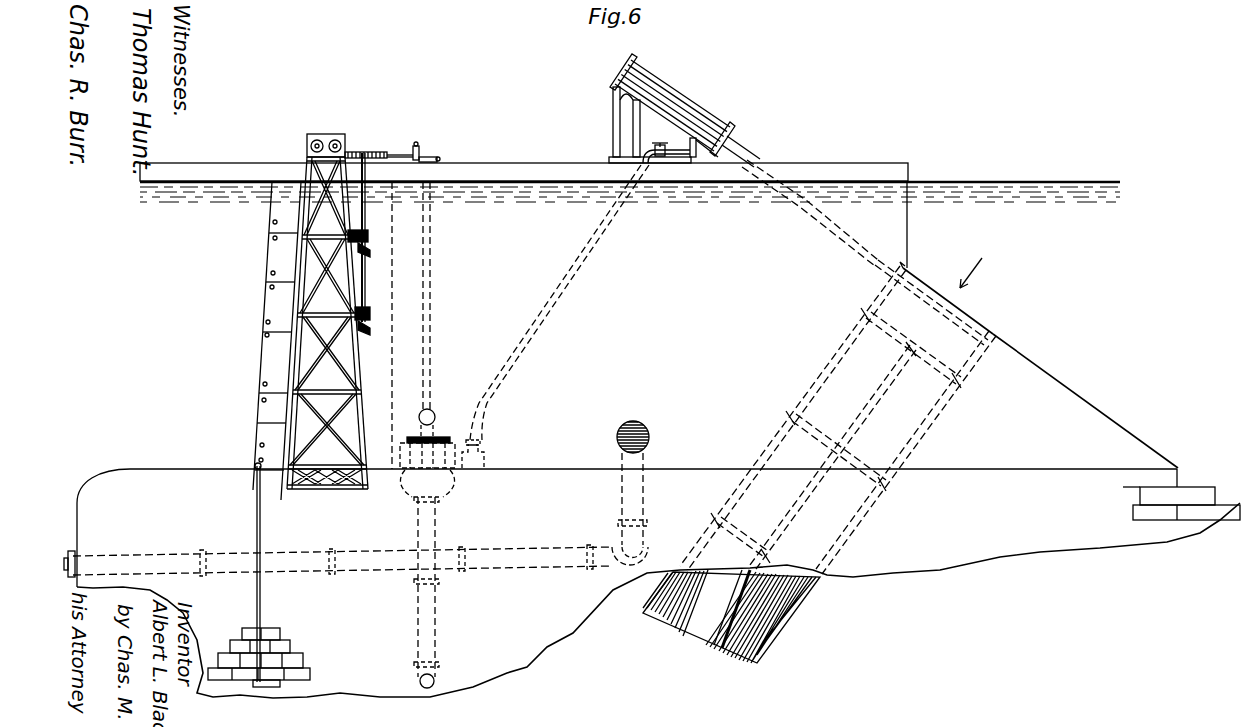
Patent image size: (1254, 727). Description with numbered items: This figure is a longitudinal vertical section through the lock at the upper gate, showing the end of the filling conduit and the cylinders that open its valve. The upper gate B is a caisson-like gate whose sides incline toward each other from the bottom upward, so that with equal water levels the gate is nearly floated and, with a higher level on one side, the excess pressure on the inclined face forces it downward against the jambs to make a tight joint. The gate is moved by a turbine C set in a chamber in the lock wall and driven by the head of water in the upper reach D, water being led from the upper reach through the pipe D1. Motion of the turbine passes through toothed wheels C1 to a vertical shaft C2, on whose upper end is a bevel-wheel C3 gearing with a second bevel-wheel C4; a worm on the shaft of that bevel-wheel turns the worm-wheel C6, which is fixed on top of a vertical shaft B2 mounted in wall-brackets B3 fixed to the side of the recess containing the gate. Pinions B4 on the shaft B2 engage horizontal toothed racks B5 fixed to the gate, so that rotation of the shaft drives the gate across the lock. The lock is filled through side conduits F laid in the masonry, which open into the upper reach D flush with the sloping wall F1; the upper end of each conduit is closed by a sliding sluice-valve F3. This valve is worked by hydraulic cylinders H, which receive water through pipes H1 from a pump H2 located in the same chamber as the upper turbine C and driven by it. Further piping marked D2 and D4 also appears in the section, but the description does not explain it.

The gate B is at (327, 311).
The vertical shaft B2 is at (367, 172).
The wall-brackets B3 is at (371, 254).
The pinions B4 is at (369, 237).
The horizontal toothed racks B5 is at (342, 226).
The turbine C is at (355, 341).
The toothed wheels C1 is at (419, 418).
The vertical shaft C2 is at (433, 312).
The bevel-wheel C3 is at (436, 157).
The bevel-wheel C4 is at (417, 144).
The worm-wheel C6 is at (375, 152).
The upper level D is at (975, 318).
The pipe D1 is at (625, 450).
The vertical discharge pipe D2 is at (436, 627).
The horizontal pipe D4 is at (150, 560).
The side conduits F is at (731, 616).
The sloping wall F1 is at (1078, 385).
The sliding sluice-valve F3 is at (845, 228).
The hydraulic cylinders H is at (716, 124).
The pipes H1 is at (562, 346).
The pump H2 is at (486, 455).